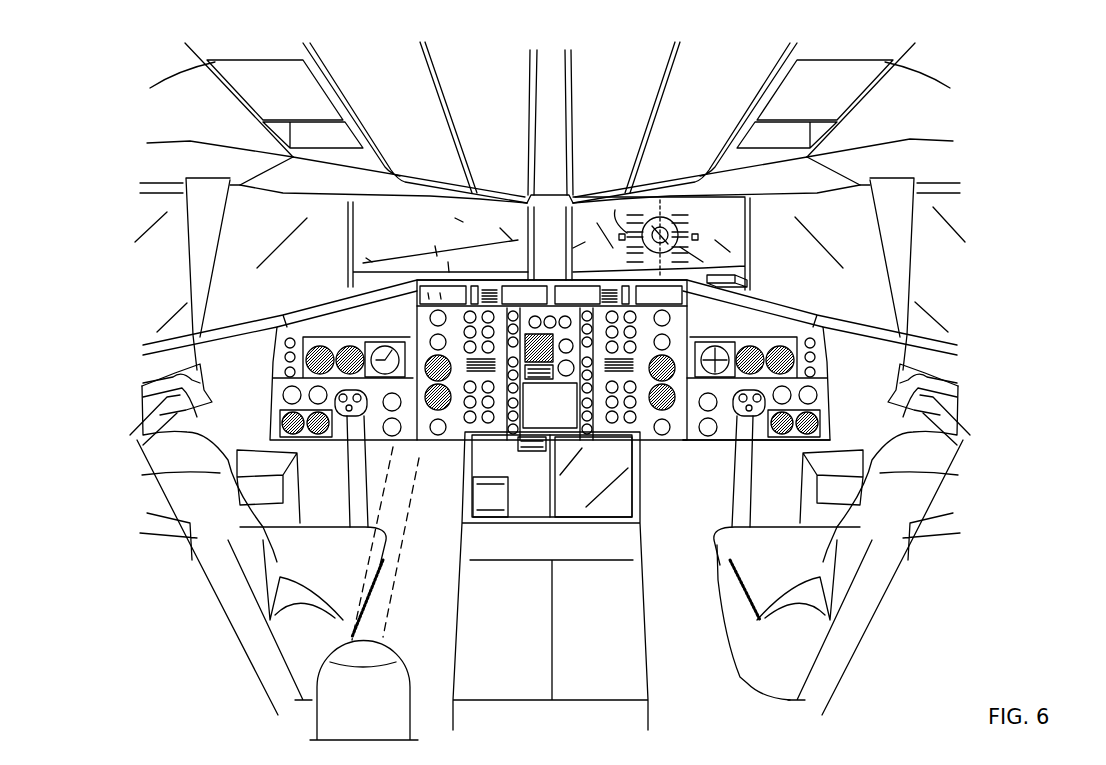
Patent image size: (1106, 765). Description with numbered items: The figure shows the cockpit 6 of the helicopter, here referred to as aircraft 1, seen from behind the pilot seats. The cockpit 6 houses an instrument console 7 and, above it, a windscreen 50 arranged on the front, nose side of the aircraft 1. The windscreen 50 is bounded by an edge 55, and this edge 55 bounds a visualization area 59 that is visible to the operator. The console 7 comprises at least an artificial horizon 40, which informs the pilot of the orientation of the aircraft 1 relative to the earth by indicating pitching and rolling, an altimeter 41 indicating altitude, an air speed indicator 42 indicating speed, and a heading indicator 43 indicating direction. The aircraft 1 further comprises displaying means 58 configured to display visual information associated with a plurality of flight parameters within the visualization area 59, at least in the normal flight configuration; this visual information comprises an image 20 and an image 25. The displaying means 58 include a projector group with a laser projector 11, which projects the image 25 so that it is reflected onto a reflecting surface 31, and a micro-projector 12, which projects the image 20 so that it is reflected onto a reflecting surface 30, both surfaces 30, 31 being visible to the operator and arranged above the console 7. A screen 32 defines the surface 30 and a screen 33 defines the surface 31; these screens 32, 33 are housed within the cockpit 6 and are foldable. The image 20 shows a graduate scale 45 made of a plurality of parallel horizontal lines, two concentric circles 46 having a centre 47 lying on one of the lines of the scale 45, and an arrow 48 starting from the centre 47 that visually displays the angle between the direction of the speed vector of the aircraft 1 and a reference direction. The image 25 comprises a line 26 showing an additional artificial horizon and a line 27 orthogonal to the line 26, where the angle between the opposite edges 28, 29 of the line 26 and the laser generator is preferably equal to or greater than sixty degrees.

The aircraft 1 is at (592, 120).
The cockpit 6 is at (302, 90).
The instrument console 7 is at (705, 450).
The laser projector 11 is at (400, 687).
The micro-projector 12 is at (723, 272).
The image 20 is at (690, 186).
The image 25 is at (432, 196).
The line 26 is at (460, 252).
The line 27 is at (448, 262).
The edge 28 is at (368, 260).
The edge 29 is at (509, 238).
The reflecting surface 30 is at (578, 243).
The reflecting surface 31 is at (363, 209).
The screen 32 is at (724, 217).
The screen 33 is at (393, 226).
The artificial horizon 40 is at (387, 340).
The altimeter 41 is at (348, 347).
The air speed indicator 42 is at (713, 340).
The heading indicator 43 is at (760, 345).
The graduate scale 45 is at (617, 196).
The concentric circles 46 is at (650, 218).
The centre 47 is at (615, 214).
The arrow 48 is at (668, 226).
The windscreen 50 is at (243, 222).
The edge 55 is at (290, 200).
The displaying means 58 is at (362, 703).
The visualization area 59 is at (454, 215).